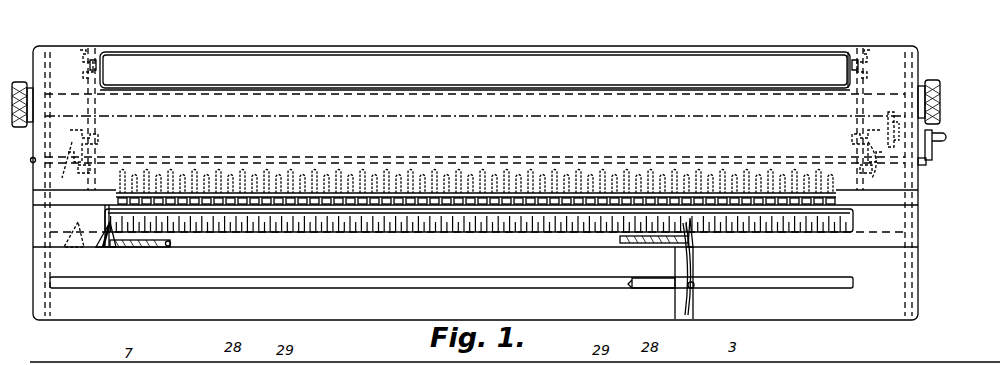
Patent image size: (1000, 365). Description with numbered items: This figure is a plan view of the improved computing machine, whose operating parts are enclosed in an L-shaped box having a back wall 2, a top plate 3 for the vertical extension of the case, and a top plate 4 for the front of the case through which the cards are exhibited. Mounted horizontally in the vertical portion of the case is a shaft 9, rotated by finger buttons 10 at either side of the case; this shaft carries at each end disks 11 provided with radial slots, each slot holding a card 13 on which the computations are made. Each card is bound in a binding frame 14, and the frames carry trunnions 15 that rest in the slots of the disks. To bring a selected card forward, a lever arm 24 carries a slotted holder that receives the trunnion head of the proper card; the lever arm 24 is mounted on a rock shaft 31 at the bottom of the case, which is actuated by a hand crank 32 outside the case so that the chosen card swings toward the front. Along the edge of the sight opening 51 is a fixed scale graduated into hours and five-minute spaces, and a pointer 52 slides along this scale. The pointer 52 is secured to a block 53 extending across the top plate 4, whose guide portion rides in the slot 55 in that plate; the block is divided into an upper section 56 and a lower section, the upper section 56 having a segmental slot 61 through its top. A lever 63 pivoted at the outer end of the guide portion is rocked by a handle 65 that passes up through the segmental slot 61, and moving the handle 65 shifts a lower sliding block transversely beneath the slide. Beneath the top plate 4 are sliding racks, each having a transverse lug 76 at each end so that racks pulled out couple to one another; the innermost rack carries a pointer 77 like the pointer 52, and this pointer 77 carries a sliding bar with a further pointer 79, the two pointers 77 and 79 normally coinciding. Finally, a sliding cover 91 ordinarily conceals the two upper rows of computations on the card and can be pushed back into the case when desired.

The back wall 2 is at (708, 46).
The top plate 3 is at (475, 116).
The top plate 4 is at (451, 284).
The shaft 9 is at (776, 106).
The finger button 10 is at (22, 127).
The disk 11 is at (96, 127).
The card 13 is at (475, 70).
The binding frame 14 is at (850, 50).
The trunnion 15 is at (88, 72).
The lever arm 24 is at (470, 165).
The rock shaft 31 is at (31, 162).
The hand crank 32 is at (934, 140).
The sight opening 51 is at (330, 209).
The pointer 52 is at (696, 242).
The block 53 is at (675, 296).
The slot 55 is at (366, 286).
The upper section 56 is at (262, 222).
The segmental slot 61 is at (694, 268).
The lever 63 is at (641, 278).
The handle 65 is at (694, 286).
The transverse lug 76 is at (640, 238).
The pointer 77 is at (118, 248).
The pointer 79 is at (101, 244).
The sliding cover 91 is at (806, 200).